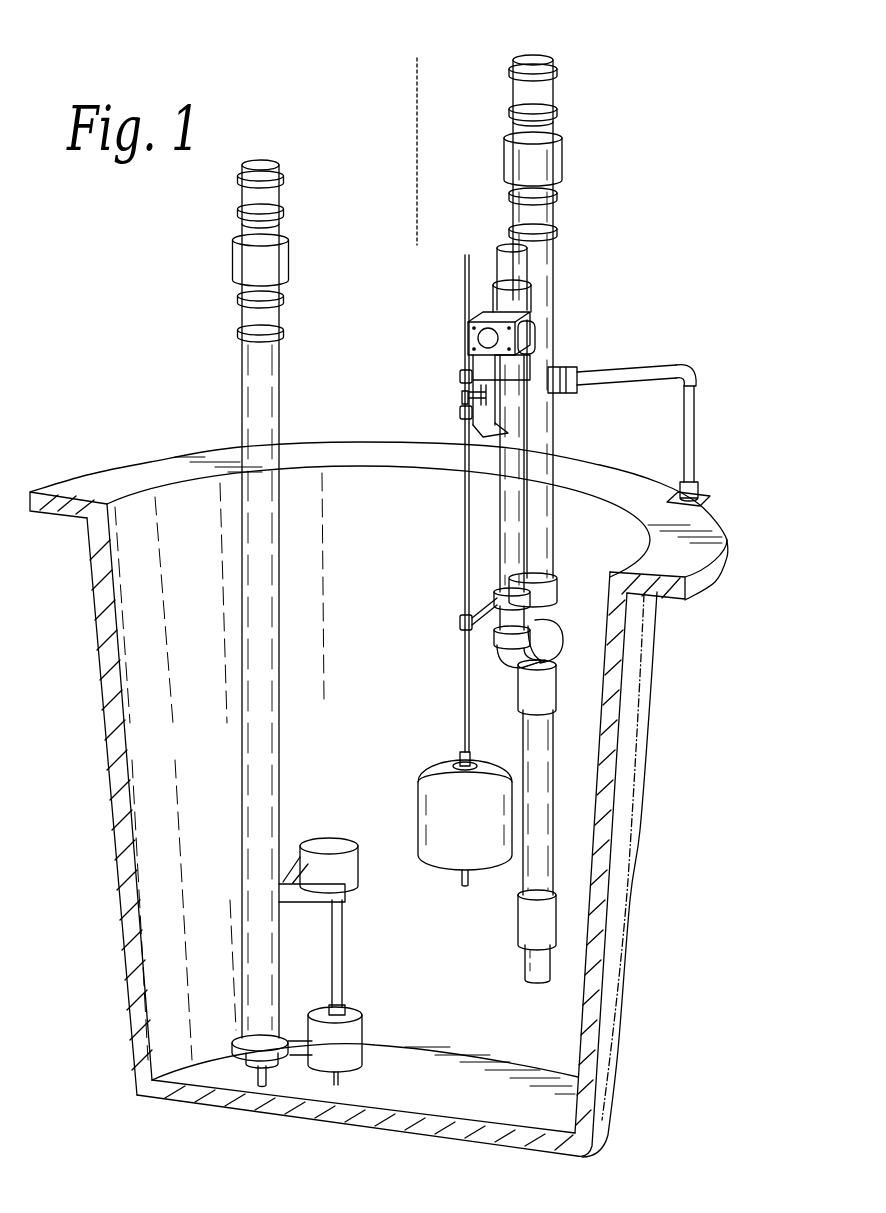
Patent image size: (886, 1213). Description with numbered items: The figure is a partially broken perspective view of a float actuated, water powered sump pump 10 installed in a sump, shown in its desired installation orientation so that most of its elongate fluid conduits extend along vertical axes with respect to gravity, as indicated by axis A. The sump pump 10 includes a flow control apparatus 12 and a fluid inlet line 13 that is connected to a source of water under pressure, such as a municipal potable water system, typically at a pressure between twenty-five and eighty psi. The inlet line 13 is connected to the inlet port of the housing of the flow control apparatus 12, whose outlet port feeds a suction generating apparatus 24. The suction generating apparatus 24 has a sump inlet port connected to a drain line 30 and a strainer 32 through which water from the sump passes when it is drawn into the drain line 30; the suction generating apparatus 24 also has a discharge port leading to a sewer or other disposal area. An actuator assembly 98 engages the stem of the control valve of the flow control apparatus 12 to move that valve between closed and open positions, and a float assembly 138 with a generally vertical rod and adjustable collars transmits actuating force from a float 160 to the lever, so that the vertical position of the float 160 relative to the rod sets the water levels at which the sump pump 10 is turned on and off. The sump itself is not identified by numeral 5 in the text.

The tank 5 is at (118, 834).
The sump pump 10 is at (394, 344).
The flow control apparatus 12 is at (453, 399).
The fluid inlet line 13 is at (512, 287).
The suction generating apparatus 24 is at (554, 594).
The drain line 30 is at (538, 753).
The strainer 32 is at (537, 963).
The actuator assembly 98 is at (460, 374).
The float assembly 138 is at (460, 622).
The float 160 is at (453, 869).
The axis A is at (417, 172).